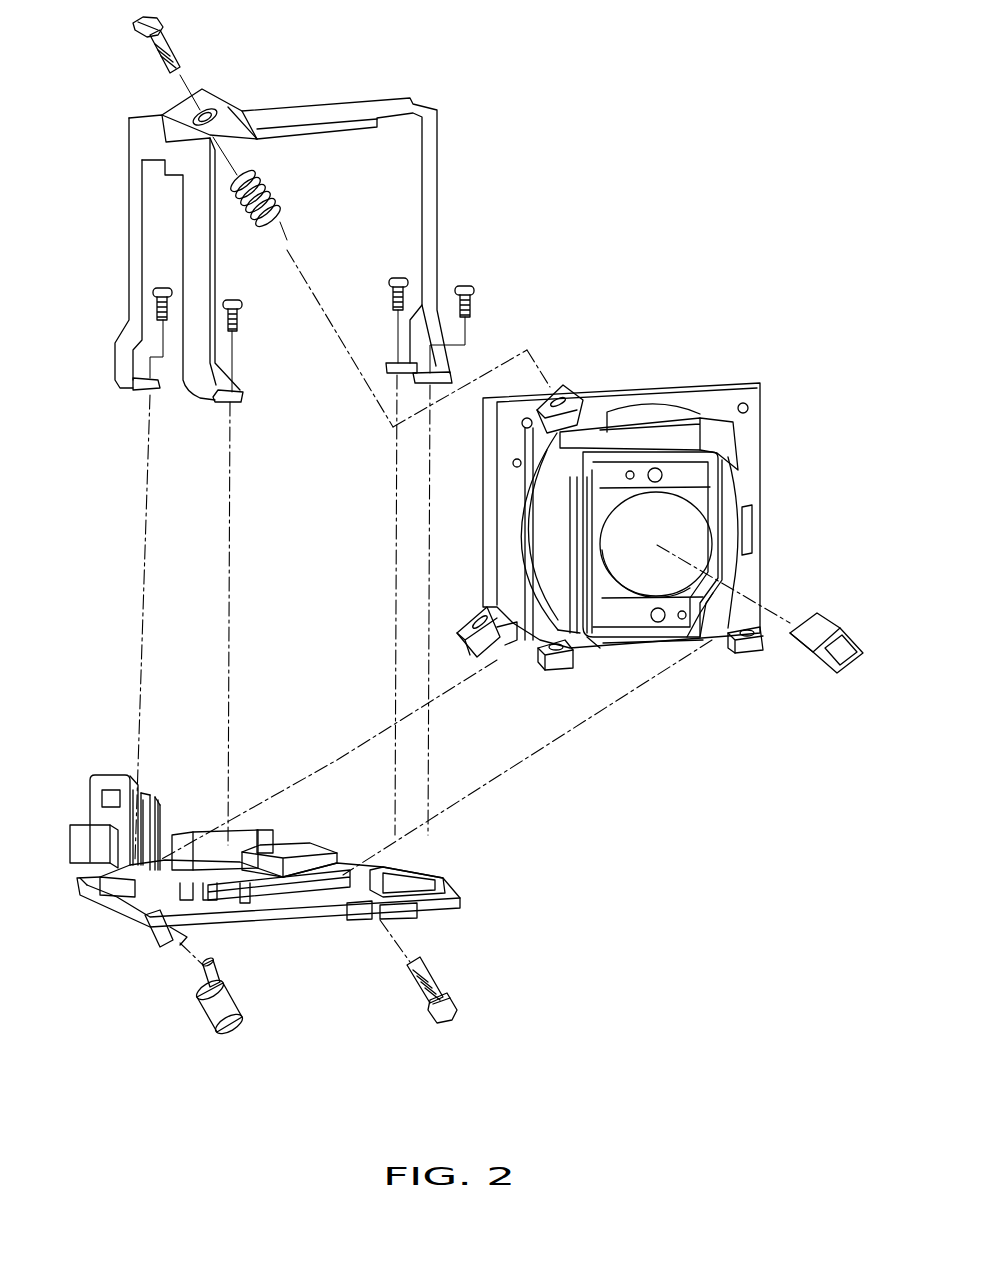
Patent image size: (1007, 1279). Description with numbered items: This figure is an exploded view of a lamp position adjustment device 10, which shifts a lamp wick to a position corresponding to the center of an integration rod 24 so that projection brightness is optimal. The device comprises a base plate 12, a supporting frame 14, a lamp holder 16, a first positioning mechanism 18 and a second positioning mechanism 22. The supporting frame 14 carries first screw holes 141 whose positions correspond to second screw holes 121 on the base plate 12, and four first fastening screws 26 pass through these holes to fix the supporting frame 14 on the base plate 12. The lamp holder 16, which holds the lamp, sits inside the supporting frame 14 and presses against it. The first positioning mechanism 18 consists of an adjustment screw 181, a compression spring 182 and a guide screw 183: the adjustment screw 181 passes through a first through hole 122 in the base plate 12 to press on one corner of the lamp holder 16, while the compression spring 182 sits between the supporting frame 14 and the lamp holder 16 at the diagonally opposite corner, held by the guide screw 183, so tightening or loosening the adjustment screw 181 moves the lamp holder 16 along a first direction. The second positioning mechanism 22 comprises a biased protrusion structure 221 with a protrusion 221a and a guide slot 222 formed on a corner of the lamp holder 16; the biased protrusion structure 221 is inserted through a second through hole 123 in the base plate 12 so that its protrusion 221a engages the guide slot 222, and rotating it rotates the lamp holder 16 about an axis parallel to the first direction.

The lamp position adjustment device 10 is at (741, 166).
The base plate 12 is at (267, 828).
The supporting frame 14 is at (445, 107).
The lamp holder 16 is at (750, 378).
The first positioning mechanism 18 is at (325, 520).
The adjustment screw 181 is at (453, 998).
The compression spring 182 is at (287, 230).
The guide screw 183 is at (162, 58).
The second positioning mechanism 22 is at (355, 803).
The biased protrusion structure 221 is at (245, 1013).
The protrusion 221a is at (207, 965).
The guide slot 222 is at (460, 620).
The integration rod 24 is at (803, 660).
The first fastening screws 26 is at (155, 290).
The second screw hole 121 is at (118, 886).
The first through hole 122 is at (352, 902).
The second through hole 123 is at (170, 933).
The first screw hole 141 is at (217, 395).